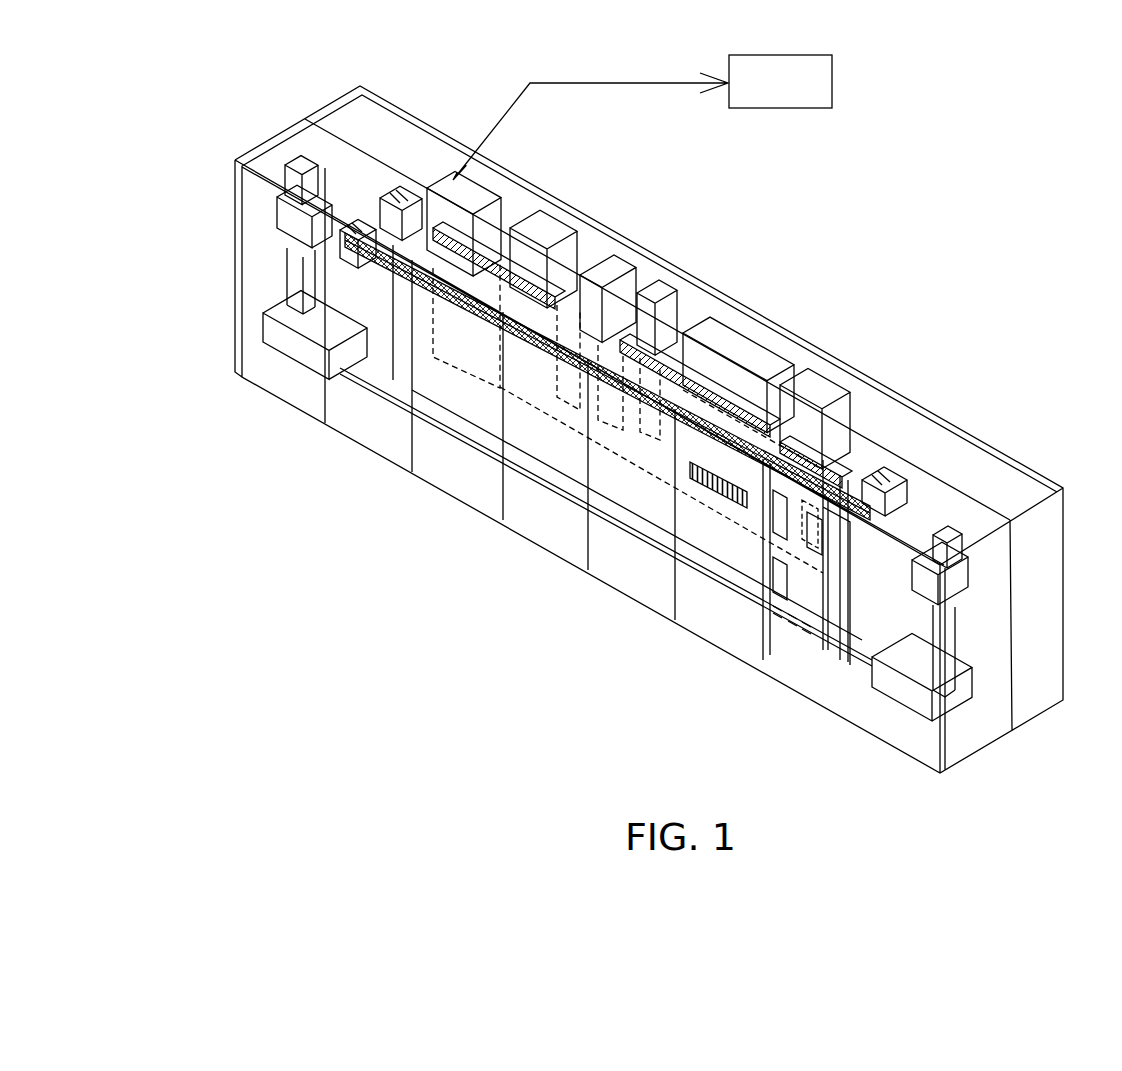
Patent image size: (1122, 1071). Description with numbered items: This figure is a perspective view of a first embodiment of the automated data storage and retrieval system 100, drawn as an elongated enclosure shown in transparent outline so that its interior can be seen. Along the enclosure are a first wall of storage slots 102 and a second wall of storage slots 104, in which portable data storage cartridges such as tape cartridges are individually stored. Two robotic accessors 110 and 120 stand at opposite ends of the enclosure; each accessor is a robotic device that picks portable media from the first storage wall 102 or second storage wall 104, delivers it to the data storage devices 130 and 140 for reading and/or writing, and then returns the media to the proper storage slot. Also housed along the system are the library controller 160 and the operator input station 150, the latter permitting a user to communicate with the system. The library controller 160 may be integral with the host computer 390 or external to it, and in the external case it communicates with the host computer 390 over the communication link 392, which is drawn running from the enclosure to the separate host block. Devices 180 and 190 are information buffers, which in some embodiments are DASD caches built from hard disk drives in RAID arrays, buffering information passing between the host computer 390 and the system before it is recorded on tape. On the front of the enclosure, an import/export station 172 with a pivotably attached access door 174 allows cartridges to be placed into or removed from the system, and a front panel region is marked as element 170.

The automated data storage and retrieval system 100 is at (701, 700).
The first wall of storage slots 102 is at (520, 208).
The second wall of storage slots 104 is at (443, 393).
The accessor 110 is at (283, 217).
The accessor 120 is at (972, 587).
The data storage device 130 is at (633, 263).
The data storage device 140 is at (673, 290).
The operator input station 150 is at (568, 230).
The library controller 160 is at (500, 178).
The enclosure front panel 170 is at (538, 477).
The import/export station 172 is at (822, 622).
The access door 174 is at (790, 610).
The information buffer 180 is at (880, 472).
The information buffer 190 is at (860, 545).
The host computer 390 is at (800, 93).
The communication link 392 is at (668, 85).